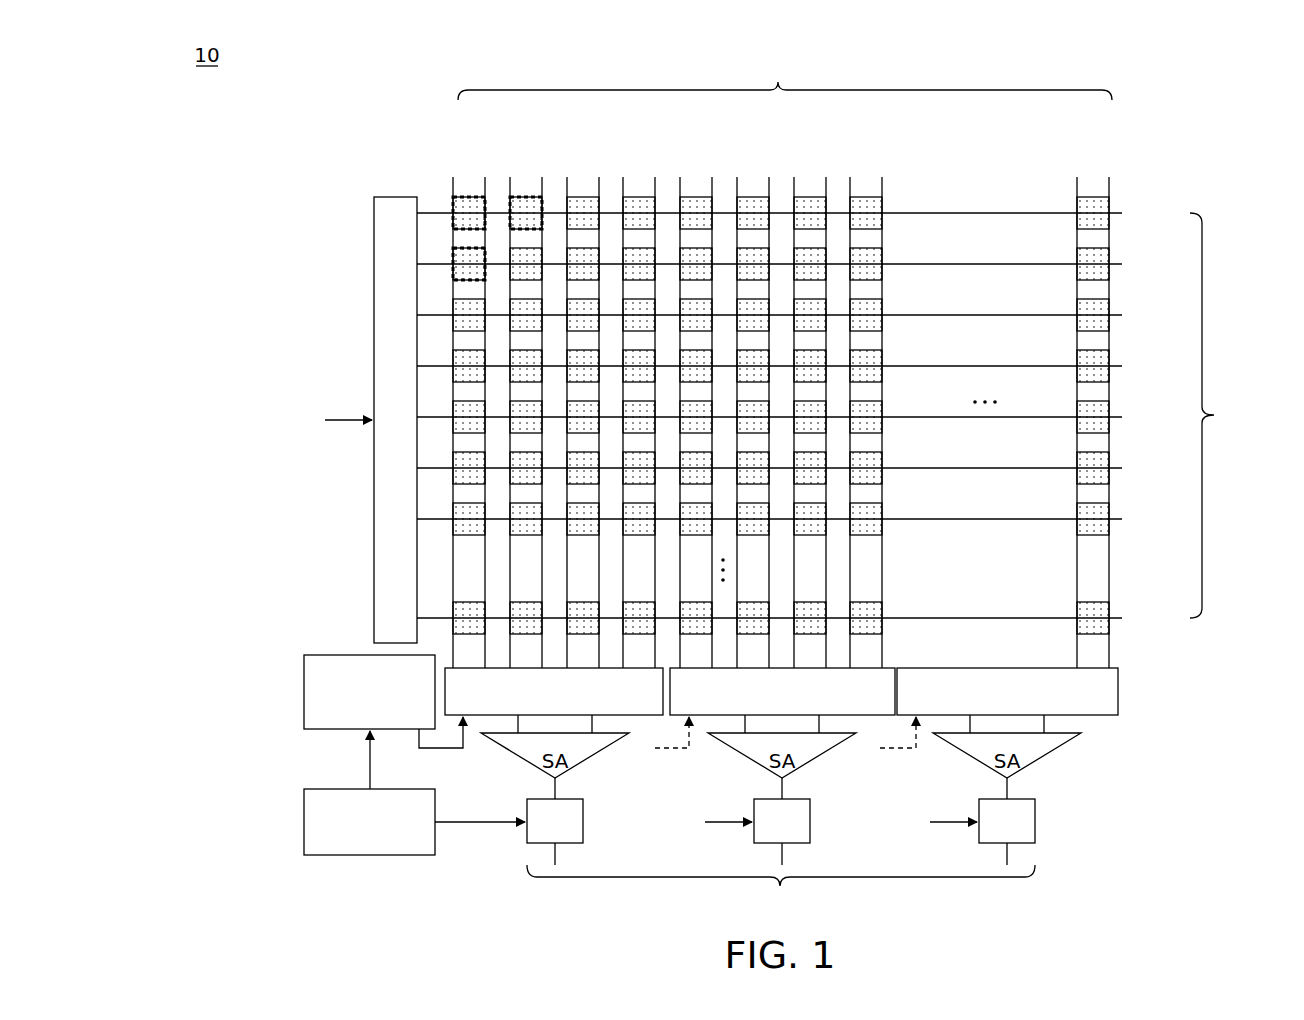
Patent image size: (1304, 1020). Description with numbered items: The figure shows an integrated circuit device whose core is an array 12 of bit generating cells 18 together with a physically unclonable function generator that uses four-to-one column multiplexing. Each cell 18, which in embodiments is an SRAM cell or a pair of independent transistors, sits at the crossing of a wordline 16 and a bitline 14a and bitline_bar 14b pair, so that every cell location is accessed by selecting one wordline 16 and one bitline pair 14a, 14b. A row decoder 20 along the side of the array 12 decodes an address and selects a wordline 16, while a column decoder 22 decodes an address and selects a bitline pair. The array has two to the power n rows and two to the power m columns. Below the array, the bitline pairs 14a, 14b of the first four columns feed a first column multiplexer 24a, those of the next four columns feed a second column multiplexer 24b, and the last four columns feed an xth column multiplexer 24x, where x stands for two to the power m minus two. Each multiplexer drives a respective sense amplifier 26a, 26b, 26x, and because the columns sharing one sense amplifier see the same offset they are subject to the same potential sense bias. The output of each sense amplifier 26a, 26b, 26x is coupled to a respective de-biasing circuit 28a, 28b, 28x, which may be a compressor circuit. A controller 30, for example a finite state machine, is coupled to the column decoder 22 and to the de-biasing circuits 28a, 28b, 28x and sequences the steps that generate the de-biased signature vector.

The array 12 is at (1142, 169).
The bitline 14a is at (453, 177).
The bitline_bar 14b is at (485, 177).
The wordline 16 is at (1122, 213).
The bit generating cell 18 is at (457, 220).
The row decoder 20 is at (374, 339).
The column decoder 22 is at (304, 690).
The first column multiplexer 24a is at (640, 715).
The second column multiplexer 24b is at (868, 715).
The xth column multiplexer 24x is at (1092, 715).
The first sense amplifier 26a is at (514, 757).
The second sense amplifier 26b is at (742, 757).
The xth sense amplifier 26x is at (968, 757).
The de-biasing circuit 28a is at (583, 822).
The de-biasing circuit 28b is at (810, 822).
The de-biasing circuit 28x is at (1035, 822).
The controller 30 is at (304, 822).